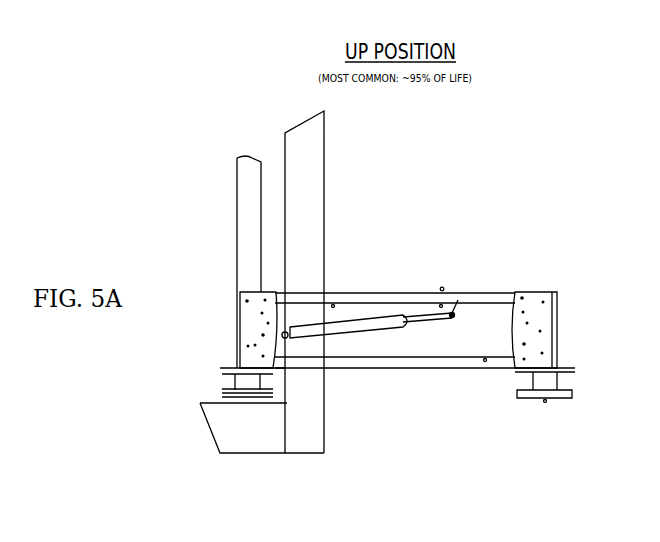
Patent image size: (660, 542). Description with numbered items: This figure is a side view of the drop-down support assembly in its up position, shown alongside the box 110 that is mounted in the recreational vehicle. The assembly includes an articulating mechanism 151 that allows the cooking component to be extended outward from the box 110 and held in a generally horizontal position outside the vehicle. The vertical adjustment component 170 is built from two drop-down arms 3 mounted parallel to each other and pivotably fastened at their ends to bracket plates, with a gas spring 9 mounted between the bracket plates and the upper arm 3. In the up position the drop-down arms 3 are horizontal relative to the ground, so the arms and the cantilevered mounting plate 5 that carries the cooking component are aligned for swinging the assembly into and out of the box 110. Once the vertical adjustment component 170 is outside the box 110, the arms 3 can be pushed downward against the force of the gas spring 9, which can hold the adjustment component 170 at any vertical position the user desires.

The box 110 is at (324, 151).
The vertical adjustment component 170 is at (338, 282).
The drop-down arms 3 is at (453, 289).
The articulating mechanism 151 is at (538, 277).
The mounting plate 5 is at (560, 367).
The gas spring 9 is at (358, 332).